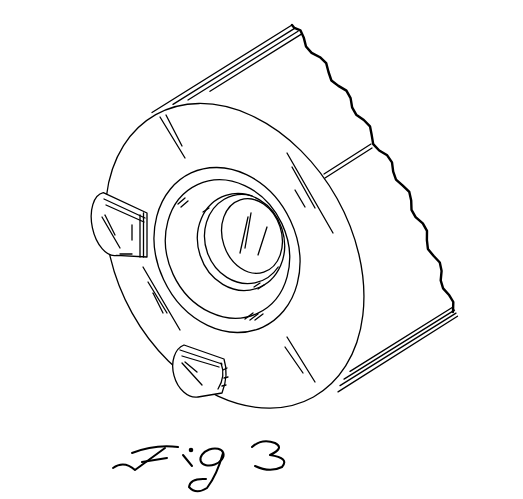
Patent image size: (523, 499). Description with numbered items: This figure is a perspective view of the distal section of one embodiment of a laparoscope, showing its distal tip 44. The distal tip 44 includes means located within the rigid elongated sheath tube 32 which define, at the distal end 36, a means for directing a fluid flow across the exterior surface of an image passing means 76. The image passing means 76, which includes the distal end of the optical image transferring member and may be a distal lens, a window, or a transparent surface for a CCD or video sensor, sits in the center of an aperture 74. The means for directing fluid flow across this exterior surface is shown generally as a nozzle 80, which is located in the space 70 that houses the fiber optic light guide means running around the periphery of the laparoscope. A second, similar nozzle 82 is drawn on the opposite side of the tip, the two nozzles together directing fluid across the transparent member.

The rigid elongated sheath tube 32 is at (410, 152).
The distal end 36 is at (420, 337).
The space 70 is at (140, 300).
The aperture 74 is at (180, 200).
The image passing means 76 is at (245, 210).
The nozzle 80 is at (100, 225).
The locating lug 82 is at (190, 380).
The distal tip 44 is at (318, 367).